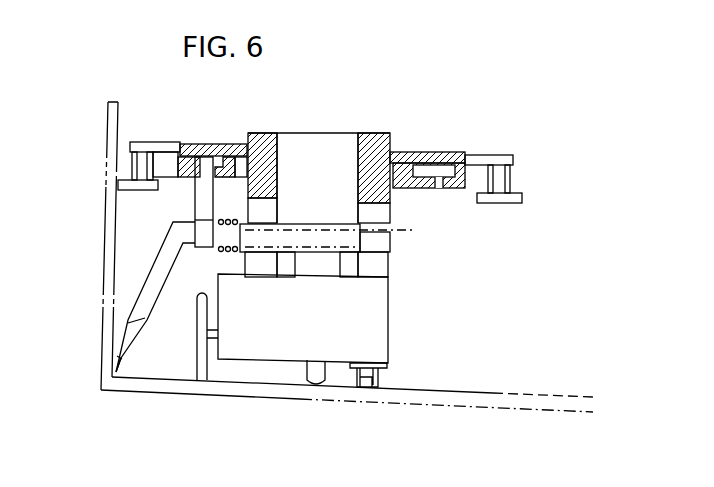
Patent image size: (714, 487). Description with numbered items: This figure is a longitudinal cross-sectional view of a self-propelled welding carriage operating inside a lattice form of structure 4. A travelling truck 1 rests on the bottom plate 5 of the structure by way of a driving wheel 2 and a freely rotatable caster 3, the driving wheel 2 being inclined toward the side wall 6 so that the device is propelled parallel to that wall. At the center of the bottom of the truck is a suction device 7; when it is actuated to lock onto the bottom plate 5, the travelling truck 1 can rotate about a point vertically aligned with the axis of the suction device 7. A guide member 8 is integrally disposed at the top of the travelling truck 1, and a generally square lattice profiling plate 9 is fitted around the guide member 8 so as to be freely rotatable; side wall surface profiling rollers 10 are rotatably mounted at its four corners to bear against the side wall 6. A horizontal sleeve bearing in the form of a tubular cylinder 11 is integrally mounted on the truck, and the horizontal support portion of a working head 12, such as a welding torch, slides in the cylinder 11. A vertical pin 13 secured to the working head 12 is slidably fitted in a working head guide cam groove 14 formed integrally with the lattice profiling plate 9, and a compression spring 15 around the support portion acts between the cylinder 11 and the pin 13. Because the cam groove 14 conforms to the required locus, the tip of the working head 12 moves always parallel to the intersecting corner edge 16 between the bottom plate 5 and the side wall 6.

The travelling truck 1 is at (265, 347).
The driving wheel 2 is at (197, 373).
The freely rotatable caster 3 is at (365, 388).
The lattice form of structure 4 is at (107, 389).
The bottom plate 5 is at (427, 398).
The side wall 6 is at (112, 136).
The suction device 7 is at (313, 385).
The guide member 8 is at (377, 133).
The lattice profiling plate 9 is at (478, 156).
The side wall surface profiling roller 10 is at (523, 197).
The tubular cylinder 11 is at (393, 223).
The working head 12 is at (124, 344).
The pin 13 is at (190, 145).
The working head guide cam groove 14 is at (233, 145).
The compression spring 15 is at (213, 210).
The intersecting corner edge 16 is at (116, 377).